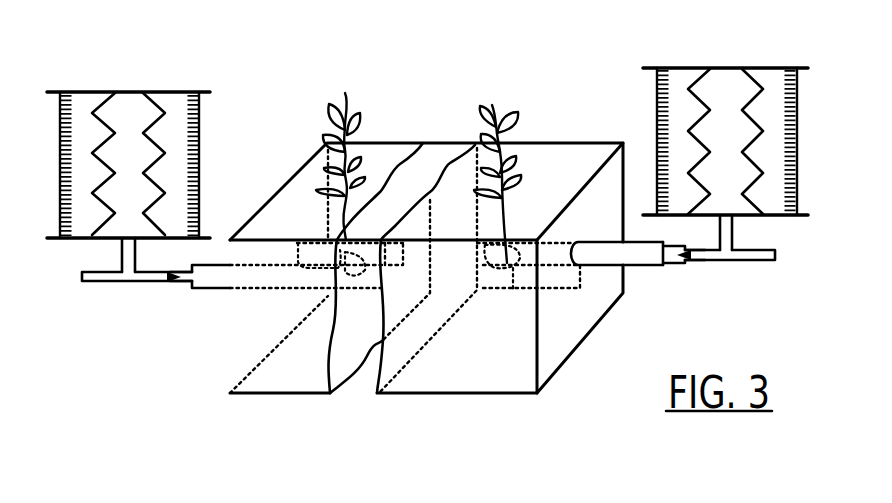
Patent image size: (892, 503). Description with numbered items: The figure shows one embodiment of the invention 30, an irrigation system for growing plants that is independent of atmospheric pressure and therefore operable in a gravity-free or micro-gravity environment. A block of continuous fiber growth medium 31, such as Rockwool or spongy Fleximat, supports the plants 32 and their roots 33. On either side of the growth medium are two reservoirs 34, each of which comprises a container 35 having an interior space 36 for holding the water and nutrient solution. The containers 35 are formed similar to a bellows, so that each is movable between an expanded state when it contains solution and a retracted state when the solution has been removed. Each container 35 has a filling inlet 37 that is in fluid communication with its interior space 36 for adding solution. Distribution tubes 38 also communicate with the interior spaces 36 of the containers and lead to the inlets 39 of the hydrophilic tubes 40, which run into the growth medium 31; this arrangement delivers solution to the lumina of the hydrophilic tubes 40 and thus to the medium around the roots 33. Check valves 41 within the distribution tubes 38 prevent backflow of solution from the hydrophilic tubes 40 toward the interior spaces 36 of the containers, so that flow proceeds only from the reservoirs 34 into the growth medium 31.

The embodiment of the invention 30 is at (486, 66).
The continuous fiber growth medium 31 is at (293, 385).
The plants 32 is at (333, 102).
The roots 33 is at (513, 291).
The reservoirs 34 is at (128, 103).
The container 35 is at (201, 150).
The interior space 36 is at (738, 131).
The filling inlet 37 is at (72, 278).
The distribution tubes 38 is at (185, 284).
The inlets 39 is at (207, 289).
The hydrophilic tubes 40 is at (269, 278).
The check valves 41 is at (178, 282).